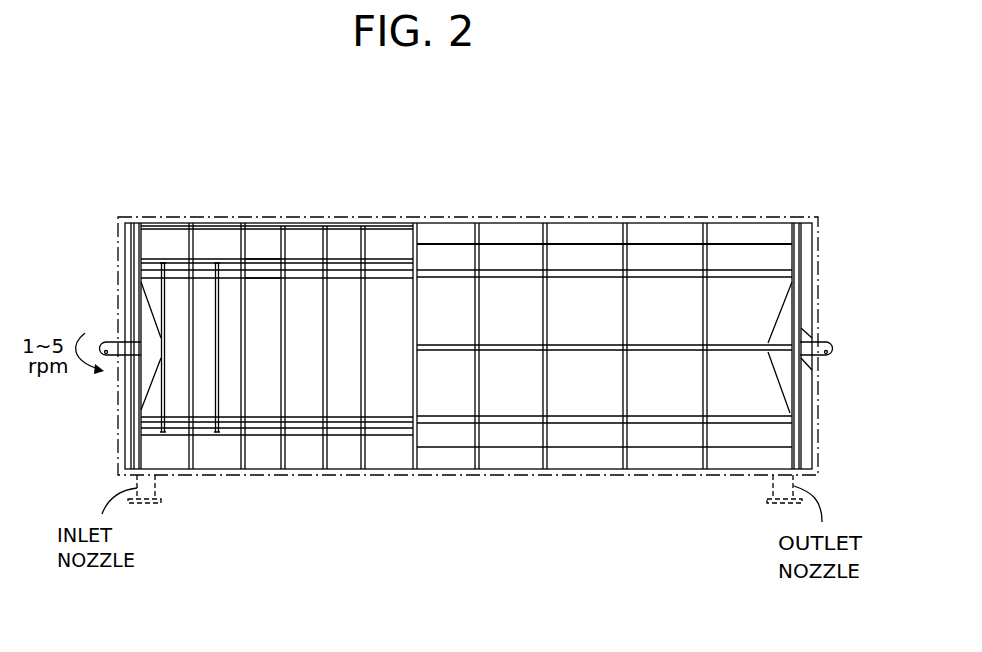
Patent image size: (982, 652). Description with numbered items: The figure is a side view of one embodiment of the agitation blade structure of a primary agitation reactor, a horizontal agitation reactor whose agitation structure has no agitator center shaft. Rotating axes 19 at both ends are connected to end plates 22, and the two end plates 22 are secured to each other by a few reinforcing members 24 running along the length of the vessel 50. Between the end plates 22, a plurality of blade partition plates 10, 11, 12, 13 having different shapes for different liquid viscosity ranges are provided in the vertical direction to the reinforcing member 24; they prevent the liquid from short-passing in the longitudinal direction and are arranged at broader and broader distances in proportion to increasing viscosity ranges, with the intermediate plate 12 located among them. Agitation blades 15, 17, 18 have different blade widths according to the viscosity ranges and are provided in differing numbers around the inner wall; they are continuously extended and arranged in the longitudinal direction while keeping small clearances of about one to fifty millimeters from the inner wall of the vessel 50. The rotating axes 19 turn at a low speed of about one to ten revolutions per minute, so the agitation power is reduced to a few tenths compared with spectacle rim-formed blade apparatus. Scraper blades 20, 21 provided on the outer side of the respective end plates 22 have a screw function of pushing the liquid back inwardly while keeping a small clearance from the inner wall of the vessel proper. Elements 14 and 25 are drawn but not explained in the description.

The blade partition plate 10 is at (186, 244).
The blade partition plate 11 is at (287, 245).
The intermediate plate 12 is at (246, 248).
The blade partition plate 13 is at (368, 243).
The scraper bar 14 is at (218, 436).
The agitation blade 15 is at (212, 240).
The agitation blade 17 is at (268, 247).
The agitation blade 18 is at (448, 236).
The rotating axis 19 is at (822, 358).
The scraper blade 20 is at (122, 290).
The scraper blade 21 is at (815, 298).
The end plate 22 is at (802, 263).
The reinforcing member 24 is at (582, 278).
The conical guide 25 is at (780, 365).
The vessel 50 is at (664, 213).